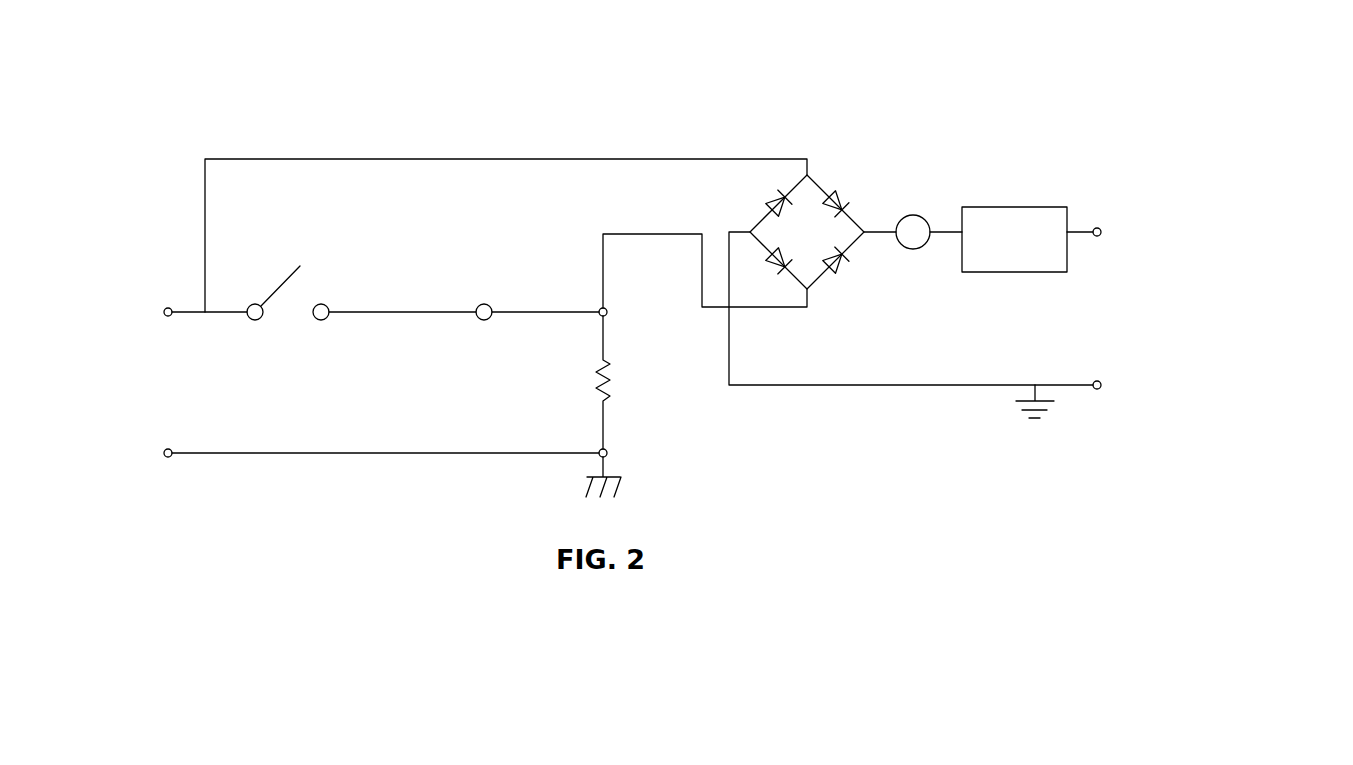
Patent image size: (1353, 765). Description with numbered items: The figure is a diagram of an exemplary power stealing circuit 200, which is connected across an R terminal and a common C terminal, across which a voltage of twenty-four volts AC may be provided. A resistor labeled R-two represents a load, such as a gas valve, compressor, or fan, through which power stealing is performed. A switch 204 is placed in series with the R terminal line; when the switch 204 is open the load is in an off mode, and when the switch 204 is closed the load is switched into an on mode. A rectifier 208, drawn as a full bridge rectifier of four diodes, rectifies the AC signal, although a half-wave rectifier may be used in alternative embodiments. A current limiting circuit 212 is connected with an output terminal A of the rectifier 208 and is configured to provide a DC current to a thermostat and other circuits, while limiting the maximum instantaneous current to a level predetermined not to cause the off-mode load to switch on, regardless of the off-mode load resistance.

The power stealing circuit 200 is at (503, 106).
The switch 204 is at (300, 265).
The rectifier 208 is at (818, 283).
The current limiting circuit 212 is at (1013, 207).